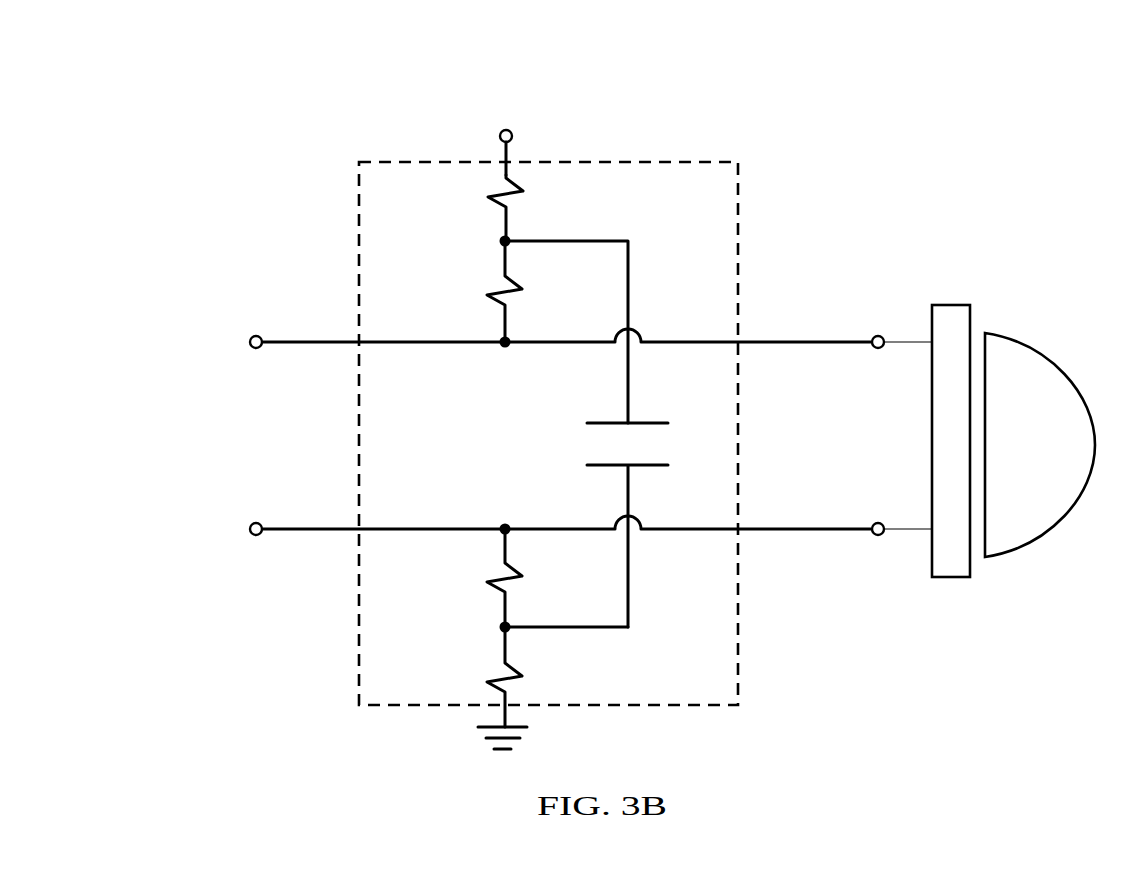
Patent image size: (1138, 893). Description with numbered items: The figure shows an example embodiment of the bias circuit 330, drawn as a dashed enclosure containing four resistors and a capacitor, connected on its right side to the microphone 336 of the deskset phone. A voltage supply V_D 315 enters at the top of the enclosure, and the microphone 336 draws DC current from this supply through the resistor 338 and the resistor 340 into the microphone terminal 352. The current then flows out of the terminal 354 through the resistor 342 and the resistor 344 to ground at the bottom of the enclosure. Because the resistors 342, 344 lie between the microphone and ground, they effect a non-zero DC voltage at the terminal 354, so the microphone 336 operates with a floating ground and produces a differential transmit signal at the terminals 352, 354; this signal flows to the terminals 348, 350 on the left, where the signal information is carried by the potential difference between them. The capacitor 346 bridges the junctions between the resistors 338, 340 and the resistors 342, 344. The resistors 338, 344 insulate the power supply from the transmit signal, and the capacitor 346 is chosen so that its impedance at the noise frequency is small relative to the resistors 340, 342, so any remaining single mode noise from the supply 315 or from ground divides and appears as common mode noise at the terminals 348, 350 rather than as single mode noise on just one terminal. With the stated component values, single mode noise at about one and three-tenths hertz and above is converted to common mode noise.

The voltage supply 315 is at (508, 62).
The bias circuit 330 is at (702, 160).
The microphone 336 is at (1031, 356).
The resistor 338 is at (521, 193).
The resistor 340 is at (495, 290).
The resistor 342 is at (493, 578).
The resistor 344 is at (493, 680).
The capacitor 346 is at (604, 421).
The terminal 348 is at (255, 335).
The terminal 350 is at (255, 522).
The microphone terminal 352 is at (877, 335).
The terminal 354 is at (877, 536).